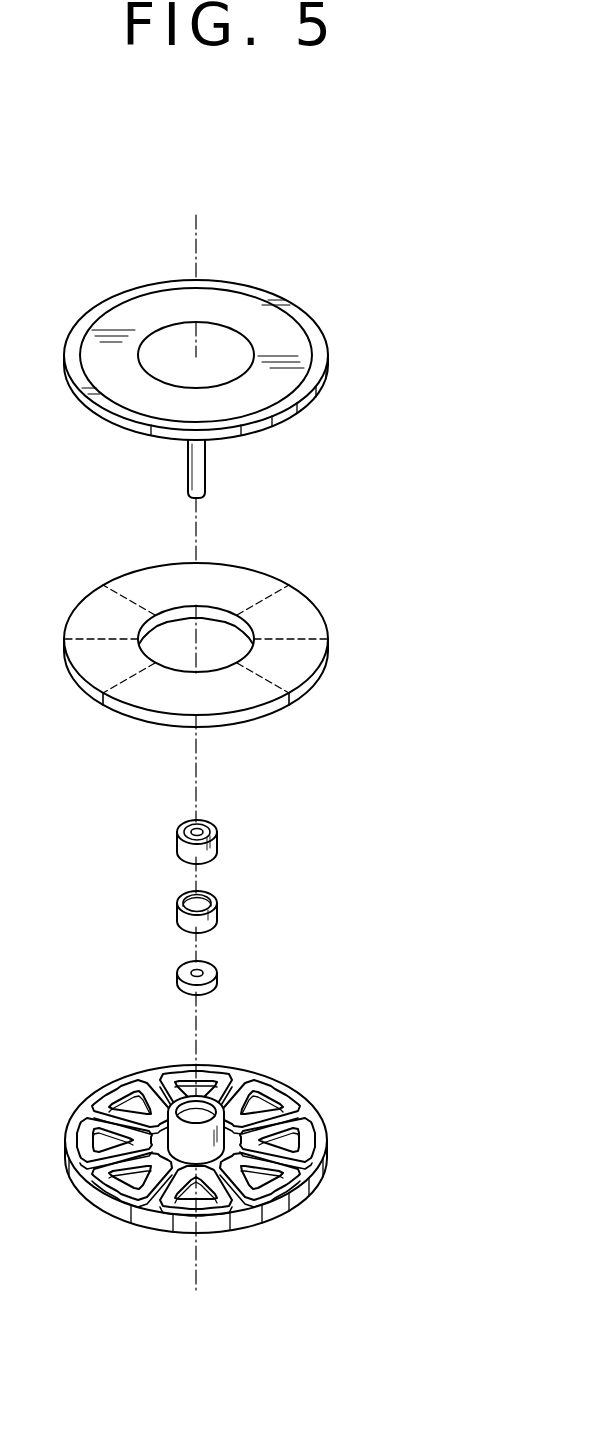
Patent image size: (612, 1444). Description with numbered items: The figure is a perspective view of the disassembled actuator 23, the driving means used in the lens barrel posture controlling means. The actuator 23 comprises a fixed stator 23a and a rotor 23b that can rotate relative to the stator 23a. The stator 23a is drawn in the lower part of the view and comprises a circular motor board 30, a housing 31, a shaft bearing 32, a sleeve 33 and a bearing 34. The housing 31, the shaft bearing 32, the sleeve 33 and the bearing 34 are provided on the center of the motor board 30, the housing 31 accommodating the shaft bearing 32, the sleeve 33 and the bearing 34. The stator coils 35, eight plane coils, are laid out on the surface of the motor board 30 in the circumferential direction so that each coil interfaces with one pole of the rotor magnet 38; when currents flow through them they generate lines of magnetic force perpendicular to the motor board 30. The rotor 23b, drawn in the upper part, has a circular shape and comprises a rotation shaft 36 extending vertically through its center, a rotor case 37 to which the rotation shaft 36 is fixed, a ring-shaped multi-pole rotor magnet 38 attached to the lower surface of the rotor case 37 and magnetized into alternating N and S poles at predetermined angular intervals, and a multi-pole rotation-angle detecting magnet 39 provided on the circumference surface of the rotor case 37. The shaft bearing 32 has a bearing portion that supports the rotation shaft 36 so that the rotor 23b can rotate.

The actuator 23 is at (318, 240).
The stator 23a is at (423, 808).
The rotor 23b is at (423, 650).
The motor board 30 is at (307, 1195).
The housing 31 is at (238, 1114).
The shaft bearing 32 is at (218, 980).
The sleeve 33 is at (218, 910).
The bearing 34 is at (218, 840).
The stator coils 35 is at (307, 1138).
The rotation shaft 36 is at (205, 468).
The rotor case 37 is at (282, 332).
The multi-pole rotor magnet 38 is at (315, 620).
The multi-pole rotation-angle detecting magnet 39 is at (318, 358).